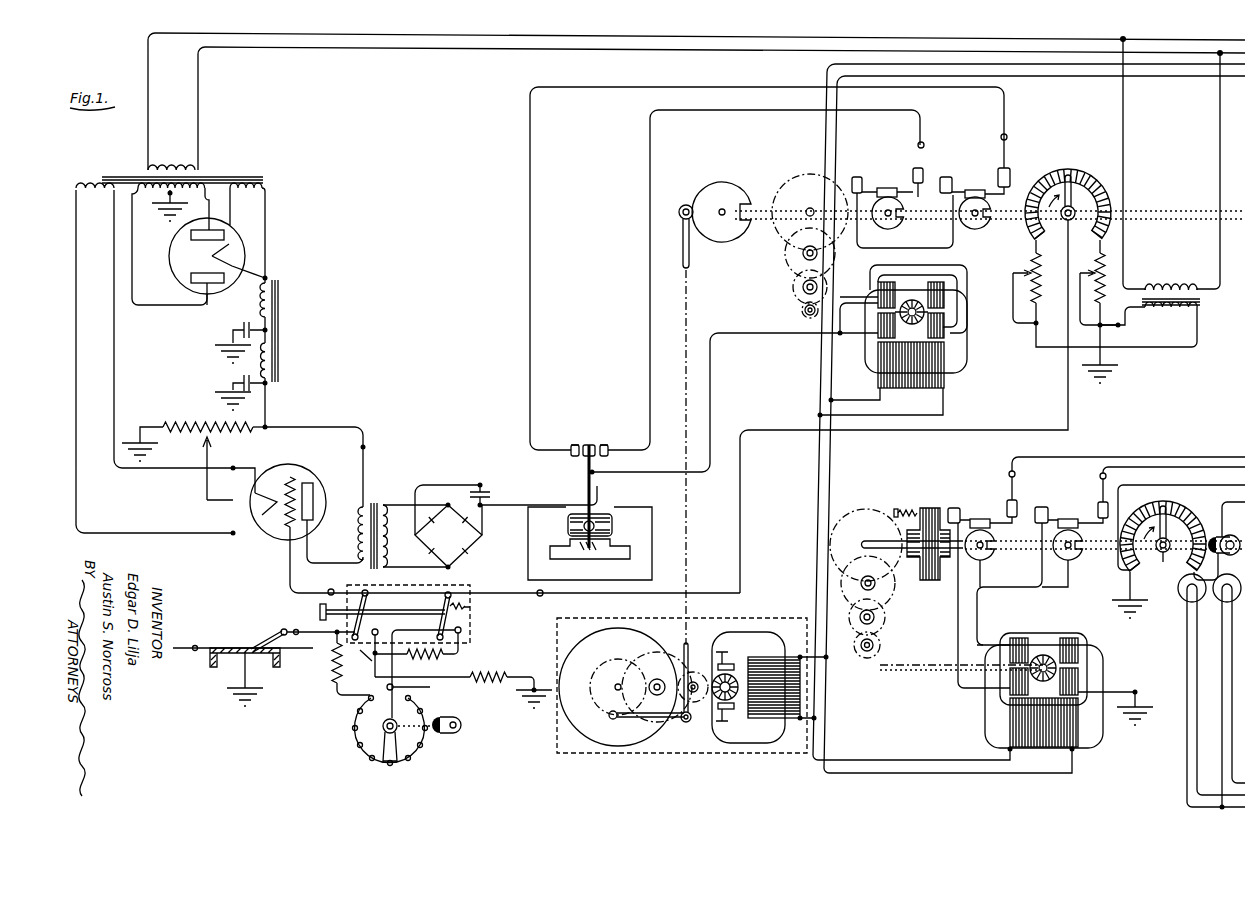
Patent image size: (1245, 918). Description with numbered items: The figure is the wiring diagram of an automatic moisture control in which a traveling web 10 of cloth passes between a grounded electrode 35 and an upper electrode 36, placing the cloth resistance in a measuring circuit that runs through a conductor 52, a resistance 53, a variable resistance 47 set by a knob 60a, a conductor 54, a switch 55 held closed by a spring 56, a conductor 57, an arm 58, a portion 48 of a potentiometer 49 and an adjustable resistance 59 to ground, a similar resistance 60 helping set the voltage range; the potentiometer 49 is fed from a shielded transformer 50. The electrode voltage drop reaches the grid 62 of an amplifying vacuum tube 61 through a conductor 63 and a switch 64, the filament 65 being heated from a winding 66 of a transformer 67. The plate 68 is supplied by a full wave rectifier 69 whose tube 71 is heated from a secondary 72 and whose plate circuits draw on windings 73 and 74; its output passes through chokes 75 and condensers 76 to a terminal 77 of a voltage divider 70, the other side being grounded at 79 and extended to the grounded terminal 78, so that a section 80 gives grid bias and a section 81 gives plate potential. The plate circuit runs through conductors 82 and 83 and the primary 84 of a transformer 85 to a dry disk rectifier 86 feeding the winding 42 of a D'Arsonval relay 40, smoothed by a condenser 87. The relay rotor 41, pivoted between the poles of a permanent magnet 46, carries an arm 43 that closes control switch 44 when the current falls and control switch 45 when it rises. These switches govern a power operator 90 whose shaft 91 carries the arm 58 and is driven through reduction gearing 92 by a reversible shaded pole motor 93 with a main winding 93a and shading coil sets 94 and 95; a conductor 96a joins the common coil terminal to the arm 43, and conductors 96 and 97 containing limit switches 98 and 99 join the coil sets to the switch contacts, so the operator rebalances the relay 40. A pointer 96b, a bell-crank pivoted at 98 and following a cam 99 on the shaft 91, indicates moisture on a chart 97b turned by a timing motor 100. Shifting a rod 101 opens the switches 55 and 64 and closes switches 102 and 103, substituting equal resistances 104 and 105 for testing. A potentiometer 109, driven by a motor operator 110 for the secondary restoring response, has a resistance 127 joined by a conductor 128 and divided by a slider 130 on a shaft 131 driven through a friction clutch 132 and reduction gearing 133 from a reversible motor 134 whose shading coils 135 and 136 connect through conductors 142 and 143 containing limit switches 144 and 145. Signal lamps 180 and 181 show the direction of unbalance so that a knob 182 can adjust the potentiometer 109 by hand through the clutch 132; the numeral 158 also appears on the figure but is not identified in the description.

The traveling web 10 is at (195, 645).
The electrode 35 is at (212, 668).
The electrode 36 is at (245, 647).
The magnetic relay 40 is at (565, 462).
The rotor 41 is at (597, 548).
The winding 42 is at (568, 528).
The arm 43 is at (597, 492).
The control switch 44 is at (576, 443).
The control switch 45 is at (604, 443).
The permanent magnet 46 is at (528, 566).
The variable resistance 47 is at (357, 740).
The potentiometer portion 48 is at (1104, 180).
The potentiometer 49 is at (1046, 170).
The shielded transformer 50 is at (1170, 335).
The conductor 52 is at (293, 628).
The resistance 53 is at (331, 675).
The conductor 54 is at (421, 688).
The switch 55 is at (445, 597).
The spring 56 is at (465, 607).
The conductor 57 is at (541, 596).
The arm 58 is at (1082, 222).
The adjustable resistance 59 is at (1110, 265).
The resistance 60 is at (1030, 258).
The knob 60a is at (443, 735).
The amplifying vacuum tube 61 is at (313, 460).
The tube grid 62 is at (290, 528).
The conductor 63 is at (330, 589).
The switch 64 is at (320, 612).
The tube filament 65 is at (273, 522).
The winding 66 is at (95, 200).
The transformer 67 is at (144, 160).
The plate 68 is at (314, 492).
The full wave vacuum tube rectifier 69 is at (255, 250).
The voltage dividing resistor 70 is at (204, 414).
The vacuum tube 71 is at (178, 286).
The secondary 72 is at (246, 198).
The winding 73 is at (134, 200).
The winding 74 is at (205, 183).
The chokes 75 is at (283, 365).
The condensers 76 is at (238, 366).
The terminal 77 is at (268, 426).
The grounded terminal 78 is at (142, 416).
The ground 79 is at (167, 222).
The section 80 is at (180, 432).
The section 81 is at (228, 433).
The conductor 82 is at (352, 565).
The conductor 83 is at (366, 447).
The primary 84 is at (360, 528).
The transformer 85 is at (391, 494).
The full wave dry disk rectifier 86 is at (457, 491).
The condenser 87 is at (485, 493).
The power operator 90 is at (972, 371).
The shaft 91 is at (937, 220).
The reduction gearing 92 is at (789, 287).
The reversible electric motor 93 is at (960, 360).
The main winding 93a is at (917, 388).
The shading coils 94 is at (878, 290).
The shading coils 95 is at (944, 290).
The conductor 96 is at (1000, 137).
The conductor 96a is at (712, 382).
The pointer 96b is at (614, 720).
The conductor 97 is at (859, 177).
The chart 97b is at (583, 725).
The cam actuated limit switch 98 is at (686, 722).
The cam actuated limit switch 99 is at (727, 190).
The timing motor 100 is at (757, 737).
The rod 101 is at (405, 612).
The switch 102 is at (367, 652).
The switch 103 is at (462, 630).
The resistance 104 is at (430, 660).
The resistance 105 is at (489, 688).
The potentiometer 109 is at (1171, 498).
The electric motor operator 110 is at (981, 727).
The resistance 127 is at (1153, 516).
The conductor 128 is at (1222, 504).
The slider 130 is at (1180, 565).
The shaft 131 is at (1027, 550).
The friction clutch 132 is at (932, 489).
The speed reduction gearing 133 is at (901, 620).
The reversible motor 134 is at (1090, 722).
The shading coils 135 is at (1010, 645).
The shading coils 136 is at (1010, 684).
The conductor 142 is at (1103, 474).
The conductor 143 is at (1012, 471).
The cam operated limit switch 144 is at (1098, 505).
The cam operated limit switch 145 is at (1007, 502).
The conductor 158 is at (1117, 571).
The signal lamp 180 is at (1188, 602).
The signal lamp 181 is at (1222, 600).
The knob 182 is at (1243, 460).